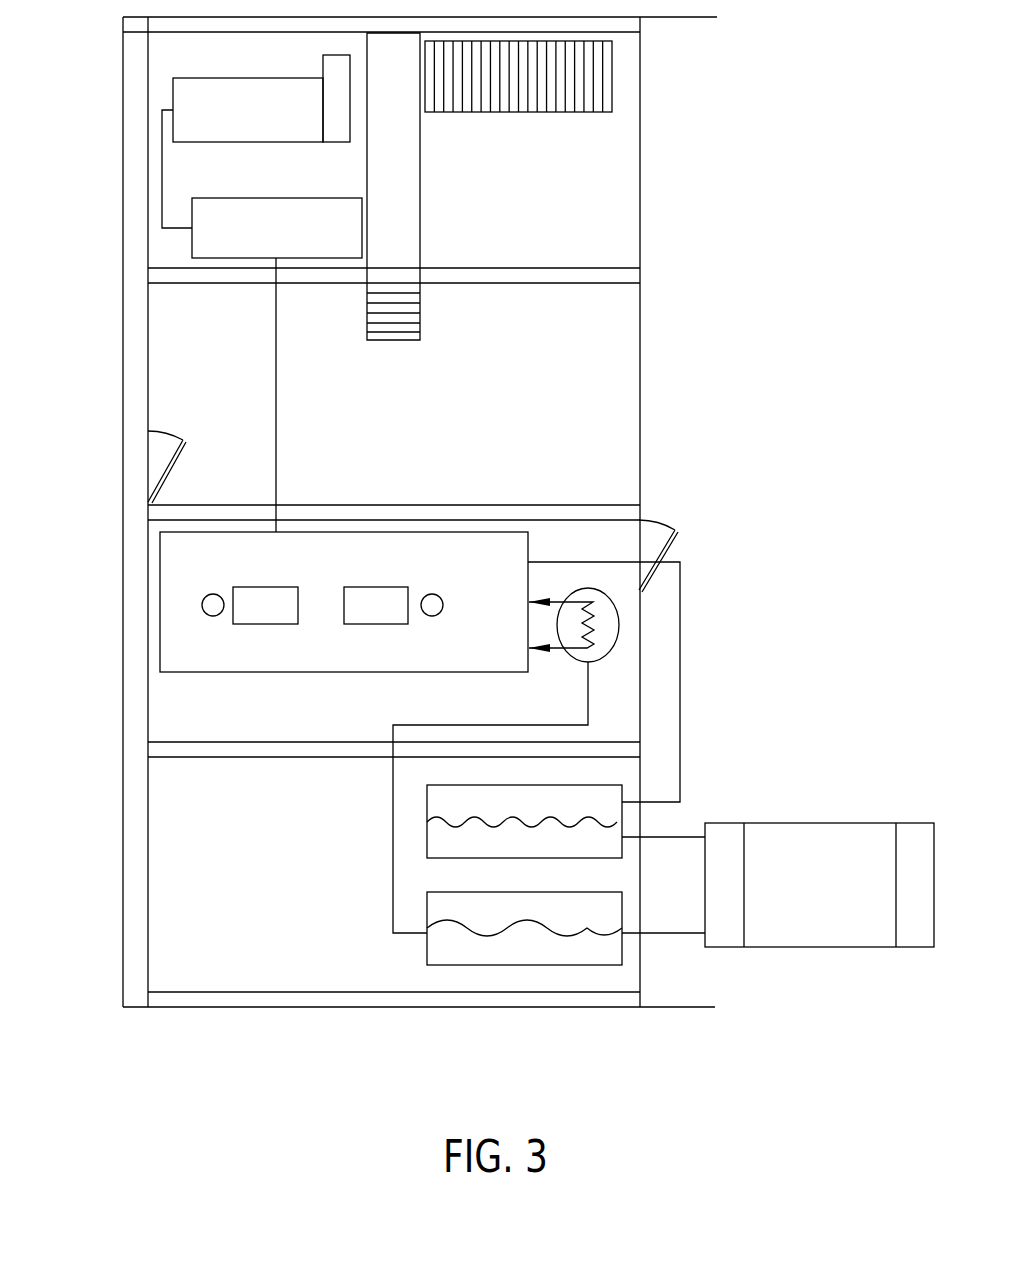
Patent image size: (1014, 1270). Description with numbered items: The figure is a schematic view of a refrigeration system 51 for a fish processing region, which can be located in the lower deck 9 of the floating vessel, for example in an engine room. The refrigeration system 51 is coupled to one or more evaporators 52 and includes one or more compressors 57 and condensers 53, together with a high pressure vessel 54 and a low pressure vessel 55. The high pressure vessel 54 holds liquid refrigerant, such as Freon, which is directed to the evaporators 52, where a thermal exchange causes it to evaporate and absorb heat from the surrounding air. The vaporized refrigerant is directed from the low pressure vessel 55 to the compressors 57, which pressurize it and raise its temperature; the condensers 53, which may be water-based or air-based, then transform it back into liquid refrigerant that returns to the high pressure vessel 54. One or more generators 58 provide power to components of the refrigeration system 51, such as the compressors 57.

The lower deck 9 is at (90, 510).
The generators 58 is at (196, 215).
The compressors 57 is at (380, 580).
The condensers 53 is at (644, 626).
The low pressure vessel 55 is at (622, 816).
The high pressure vessel 54 is at (460, 955).
The refrigeration system 51 is at (850, 697).
The evaporators 52 is at (918, 816).